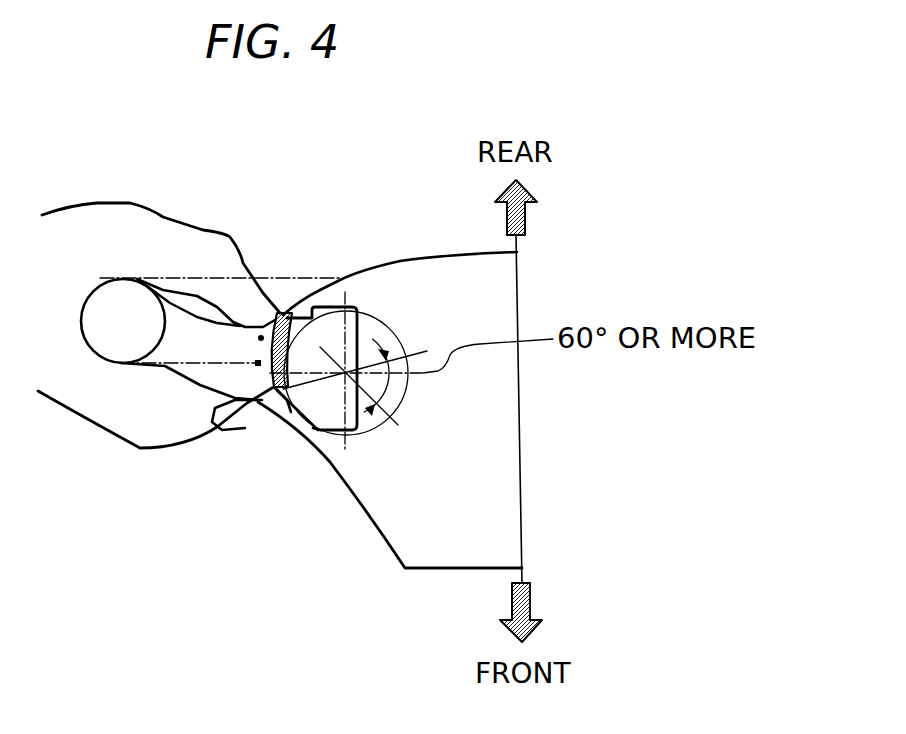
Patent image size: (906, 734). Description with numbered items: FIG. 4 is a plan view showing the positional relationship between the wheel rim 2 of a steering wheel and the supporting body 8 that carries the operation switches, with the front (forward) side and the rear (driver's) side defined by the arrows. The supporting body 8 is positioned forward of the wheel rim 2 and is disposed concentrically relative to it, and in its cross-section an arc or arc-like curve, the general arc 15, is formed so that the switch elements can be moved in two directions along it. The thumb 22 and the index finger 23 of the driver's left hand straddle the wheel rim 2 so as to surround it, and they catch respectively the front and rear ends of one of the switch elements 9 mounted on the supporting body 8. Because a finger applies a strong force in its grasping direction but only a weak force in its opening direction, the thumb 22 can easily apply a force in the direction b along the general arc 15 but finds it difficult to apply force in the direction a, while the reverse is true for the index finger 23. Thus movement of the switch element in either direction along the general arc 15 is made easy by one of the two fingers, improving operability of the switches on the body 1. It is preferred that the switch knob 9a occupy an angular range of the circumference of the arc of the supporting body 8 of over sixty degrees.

The body 1 is at (467, 481).
The wheel rim 2 is at (337, 292).
The supporting body 8 is at (315, 428).
The switch element 9 is at (372, 303).
The switch knob 9a is at (275, 387).
The general arc 15 is at (278, 312).
The thumb 22 is at (147, 218).
The index finger 23 is at (157, 440).
The direction a is at (260, 338).
The direction b is at (257, 367).